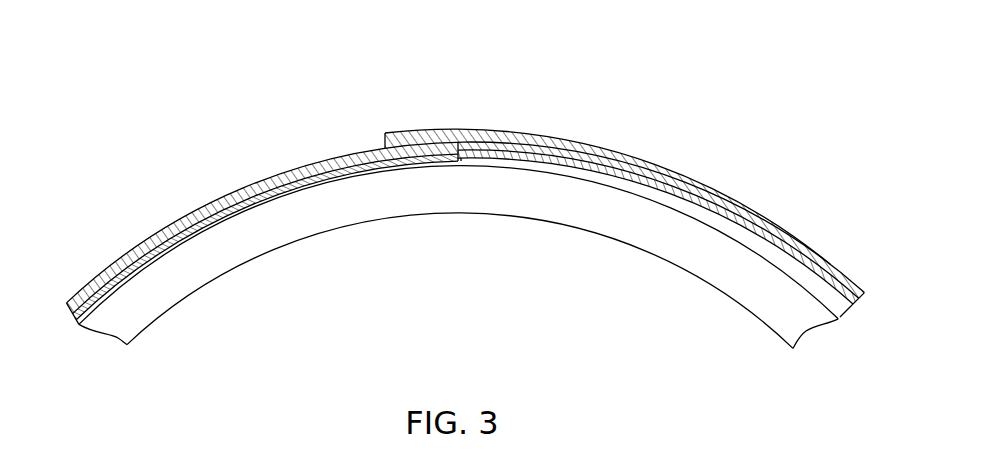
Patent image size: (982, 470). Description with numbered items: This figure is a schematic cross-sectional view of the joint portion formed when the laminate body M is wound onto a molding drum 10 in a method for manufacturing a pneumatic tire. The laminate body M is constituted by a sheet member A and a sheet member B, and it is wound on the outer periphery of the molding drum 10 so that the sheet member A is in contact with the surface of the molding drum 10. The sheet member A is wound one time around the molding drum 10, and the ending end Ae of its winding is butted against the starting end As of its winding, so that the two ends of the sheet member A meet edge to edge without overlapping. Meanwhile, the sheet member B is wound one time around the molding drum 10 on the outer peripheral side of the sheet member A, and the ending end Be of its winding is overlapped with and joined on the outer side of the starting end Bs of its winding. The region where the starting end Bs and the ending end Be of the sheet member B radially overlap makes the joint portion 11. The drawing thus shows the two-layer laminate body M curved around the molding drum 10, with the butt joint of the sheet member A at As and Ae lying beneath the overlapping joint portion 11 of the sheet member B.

The molding drum 10 is at (282, 236).
The joint portion 11 is at (460, 94).
The laminate body M is at (466, 201).
The sheet member A is at (203, 206).
The sheet member B is at (112, 263).
The ending end of winding Be is at (385, 140).
The starting end of winding Bs is at (458, 143).
The starting end of winding As is at (460, 165).
The ending end of winding Ae is at (480, 165).